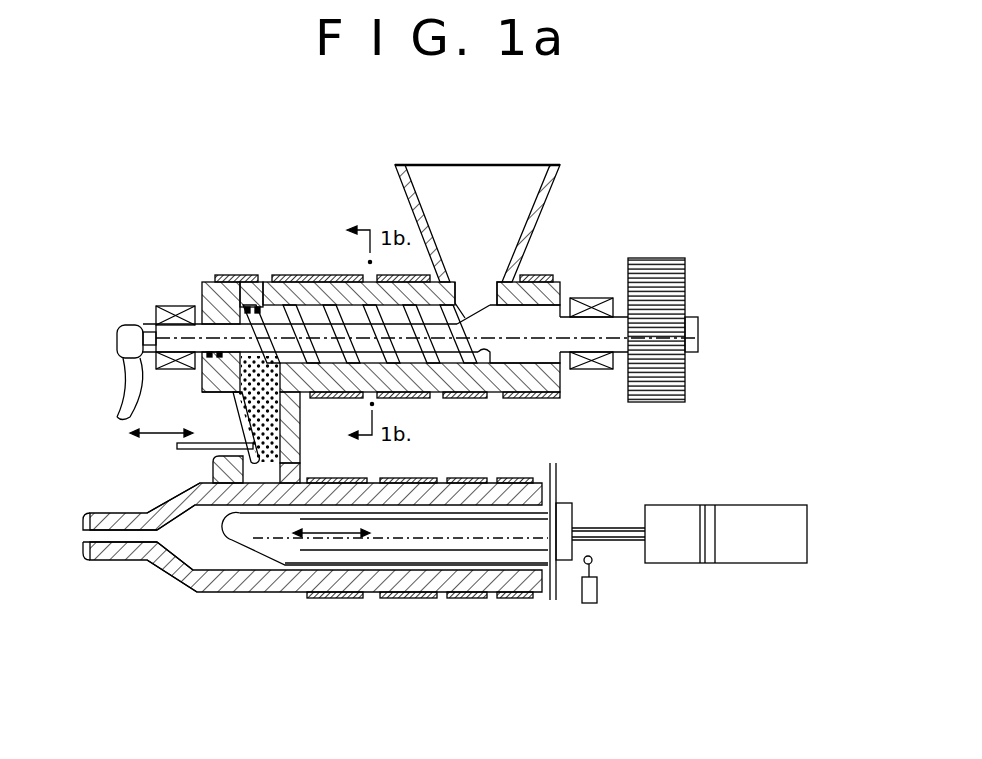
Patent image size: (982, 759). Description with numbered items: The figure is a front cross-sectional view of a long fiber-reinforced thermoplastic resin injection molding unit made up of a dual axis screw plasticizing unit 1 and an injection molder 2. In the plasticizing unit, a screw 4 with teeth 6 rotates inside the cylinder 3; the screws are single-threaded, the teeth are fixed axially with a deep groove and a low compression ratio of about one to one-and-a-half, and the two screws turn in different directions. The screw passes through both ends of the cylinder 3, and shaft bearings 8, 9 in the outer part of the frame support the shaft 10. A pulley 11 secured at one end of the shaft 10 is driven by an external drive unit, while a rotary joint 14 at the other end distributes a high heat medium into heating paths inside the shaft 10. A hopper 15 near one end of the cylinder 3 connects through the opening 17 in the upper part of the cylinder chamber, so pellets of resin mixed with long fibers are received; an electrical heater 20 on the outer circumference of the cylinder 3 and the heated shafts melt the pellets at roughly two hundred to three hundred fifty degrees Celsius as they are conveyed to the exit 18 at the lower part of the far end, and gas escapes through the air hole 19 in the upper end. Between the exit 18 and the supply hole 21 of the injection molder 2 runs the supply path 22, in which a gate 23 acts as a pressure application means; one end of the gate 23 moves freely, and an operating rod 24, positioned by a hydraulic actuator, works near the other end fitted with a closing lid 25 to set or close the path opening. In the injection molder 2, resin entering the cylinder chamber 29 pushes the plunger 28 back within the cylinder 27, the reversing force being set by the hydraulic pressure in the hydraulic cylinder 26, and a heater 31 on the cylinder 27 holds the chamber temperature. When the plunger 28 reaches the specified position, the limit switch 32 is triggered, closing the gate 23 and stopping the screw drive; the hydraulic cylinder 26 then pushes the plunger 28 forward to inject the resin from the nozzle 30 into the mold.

The dual axis screw plasticizing unit 1 is at (588, 230).
The injection molder 2 is at (289, 603).
The cylinder 3 is at (331, 292).
The screw 4 is at (537, 313).
The teeth 6 is at (447, 365).
The shaft bearing 8 is at (168, 307).
The shaft bearing 9 is at (582, 369).
The shaft 10 is at (218, 320).
The pulley 11 is at (673, 282).
The rotary joint 14 is at (117, 345).
The hopper 15 is at (518, 165).
The opening 17 is at (465, 290).
The exit 18 is at (243, 373).
The air hole 19 is at (262, 280).
The electrical heater 20 is at (287, 275).
The supply hole 21 is at (252, 498).
The supply path 22 is at (270, 438).
The gate 23 is at (233, 413).
The operating rod 24 is at (177, 445).
The closing lid 25 is at (213, 463).
The hydraulic cylinder 26 is at (747, 563).
The cylinder 27 is at (373, 572).
The plunger 28 is at (506, 512).
The cylinder chamber 29 is at (188, 545).
The nozzle 30 is at (93, 563).
The heater 31 is at (417, 596).
The limit switch 32 is at (598, 592).